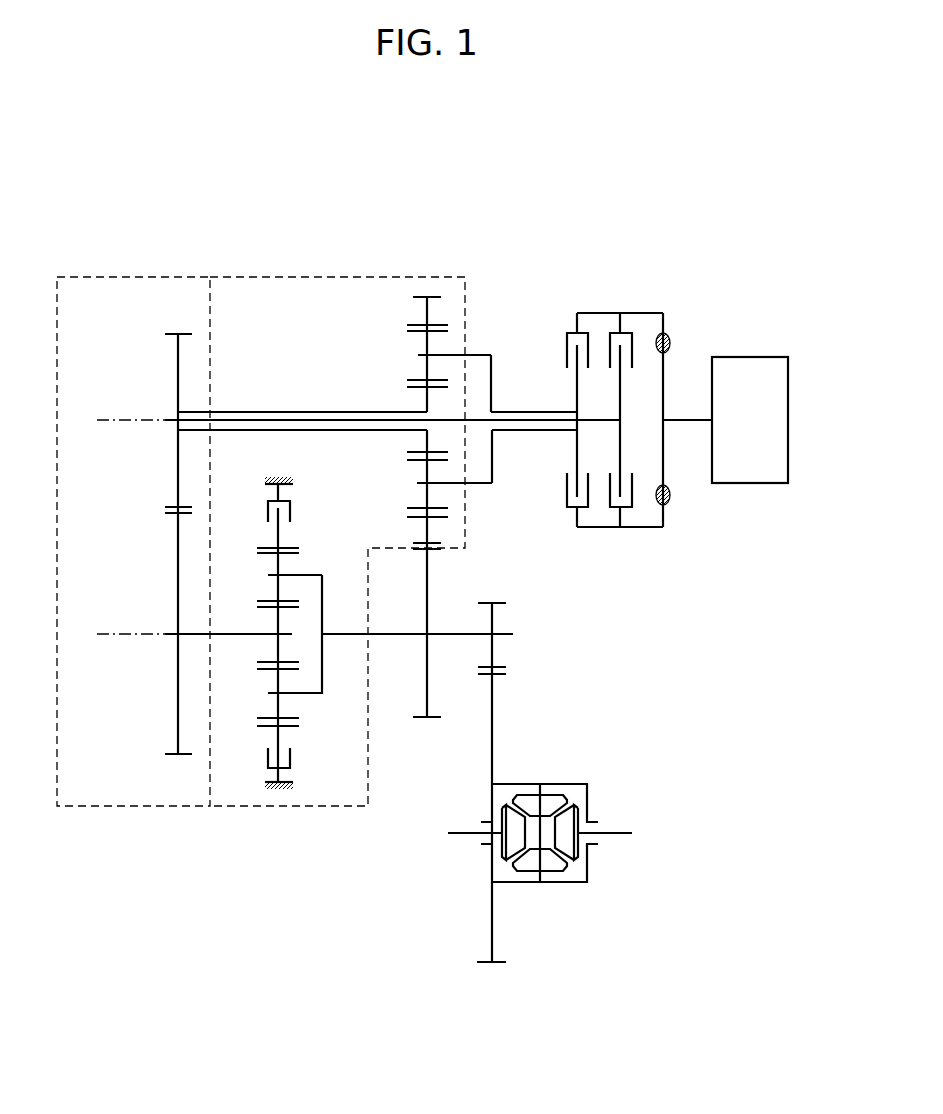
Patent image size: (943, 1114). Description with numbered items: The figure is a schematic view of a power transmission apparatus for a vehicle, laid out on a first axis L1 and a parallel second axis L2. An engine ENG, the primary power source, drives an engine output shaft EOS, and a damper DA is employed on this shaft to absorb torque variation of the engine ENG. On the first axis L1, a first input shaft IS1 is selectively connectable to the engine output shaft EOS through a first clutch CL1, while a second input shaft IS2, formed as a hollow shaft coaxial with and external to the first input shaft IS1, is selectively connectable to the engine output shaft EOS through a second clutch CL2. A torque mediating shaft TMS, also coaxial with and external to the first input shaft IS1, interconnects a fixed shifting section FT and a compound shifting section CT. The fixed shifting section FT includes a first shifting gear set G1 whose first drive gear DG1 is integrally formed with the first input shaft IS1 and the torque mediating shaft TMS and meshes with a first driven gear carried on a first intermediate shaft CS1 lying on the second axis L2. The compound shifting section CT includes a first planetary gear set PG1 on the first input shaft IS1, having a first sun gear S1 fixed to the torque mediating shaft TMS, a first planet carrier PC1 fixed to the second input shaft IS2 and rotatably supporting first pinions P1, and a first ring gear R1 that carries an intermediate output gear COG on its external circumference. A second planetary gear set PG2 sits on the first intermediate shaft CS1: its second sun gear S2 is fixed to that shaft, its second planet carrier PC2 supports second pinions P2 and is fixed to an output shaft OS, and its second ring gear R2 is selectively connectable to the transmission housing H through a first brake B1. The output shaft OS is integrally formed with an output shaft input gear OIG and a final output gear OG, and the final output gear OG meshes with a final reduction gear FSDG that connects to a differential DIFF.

The fixed shifting section FT is at (132, 262).
The compound shifting section CT is at (357, 262).
The first planetary gear set PG1 is at (304, 473).
The first planet carrier PC1 is at (479, 355).
The first ring gear R1 is at (413, 325).
The first pinions P1 is at (418, 355).
The first sun gear S1 is at (413, 387).
The torque mediating shaft TMS is at (301, 412).
The first input shaft IS1 is at (383, 430).
The second input shaft IS2 is at (528, 412).
The first drive gear DG1 is at (178, 360).
The first axis L1 is at (345, 422).
The second axis L2 is at (181, 639).
The transmission housing H is at (276, 477).
The second ring gear R2 is at (263, 548).
The second pinions P2 is at (268, 575).
The second sun gear S2 is at (263, 607).
The first intermediate shaft CS1 is at (232, 636).
The second planet carrier PC2 is at (322, 610).
The second planetary gear set PG2 is at (300, 633).
The output shaft input gear OIG is at (427, 577).
The output shaft OS is at (452, 634).
The final output gear OG is at (492, 614).
The intermediate output gear COG is at (428, 540).
The final reduction gear FSDG is at (492, 720).
The differential DIFF is at (588, 795).
The first clutch CL1 is at (634, 312).
The second clutch CL2 is at (589, 312).
The damper DA is at (680, 330).
The engine ENG is at (750, 420).
The engine output shaft EOS is at (688, 421).
The first shifting gear set G1 is at (177, 778).
The first brake B1 is at (257, 778).